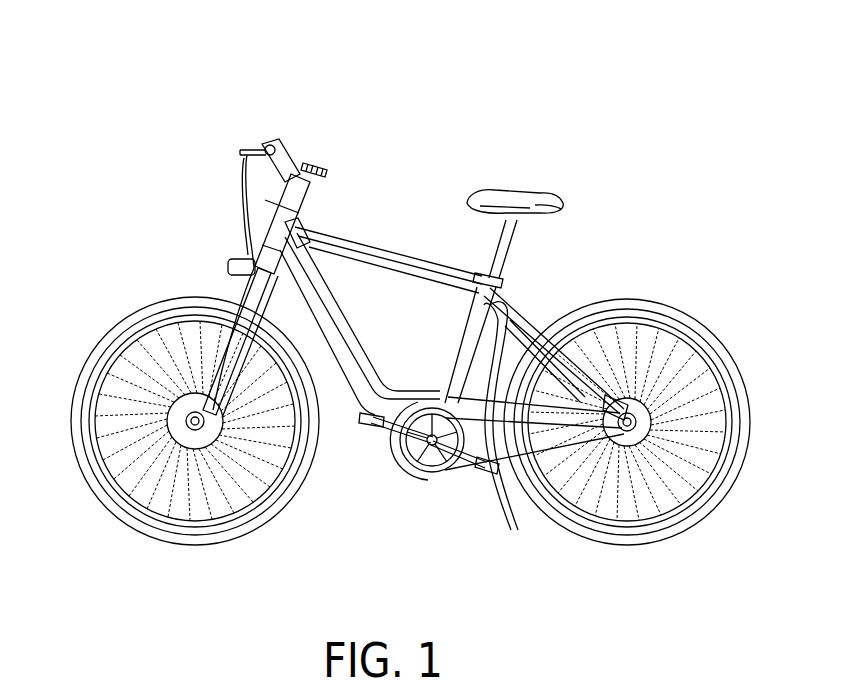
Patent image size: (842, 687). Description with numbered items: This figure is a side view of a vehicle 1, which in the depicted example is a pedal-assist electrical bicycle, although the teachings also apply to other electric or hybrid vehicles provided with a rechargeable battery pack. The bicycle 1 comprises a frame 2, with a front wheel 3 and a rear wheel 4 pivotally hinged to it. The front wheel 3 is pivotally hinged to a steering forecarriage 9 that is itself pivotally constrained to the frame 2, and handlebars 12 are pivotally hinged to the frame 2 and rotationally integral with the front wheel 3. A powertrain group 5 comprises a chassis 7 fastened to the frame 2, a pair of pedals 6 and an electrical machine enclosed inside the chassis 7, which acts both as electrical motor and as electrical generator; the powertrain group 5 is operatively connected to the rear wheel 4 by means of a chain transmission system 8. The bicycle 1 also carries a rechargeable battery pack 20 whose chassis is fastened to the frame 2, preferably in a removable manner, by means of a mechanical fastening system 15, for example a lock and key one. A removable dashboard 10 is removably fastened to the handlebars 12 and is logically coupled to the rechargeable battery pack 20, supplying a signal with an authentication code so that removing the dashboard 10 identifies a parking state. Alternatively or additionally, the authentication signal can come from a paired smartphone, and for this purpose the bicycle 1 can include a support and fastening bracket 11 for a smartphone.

The vehicle 1 is at (222, 70).
The frame 2 is at (380, 250).
The front wheel 3 is at (102, 342).
The rear wheel 4 is at (723, 360).
The powertrain group 5 is at (431, 486).
The pedals 6 is at (367, 432).
The chassis 7 is at (450, 408).
The chain transmission system 8 is at (534, 448).
The steering forecarriage 9 is at (290, 307).
The removable dashboard 10 is at (287, 148).
The support and fastening bracket 11 is at (307, 168).
The handlebars 12 is at (270, 167).
The mechanical fastening system 15 is at (462, 323).
The rechargeable battery pack 20 is at (508, 361).